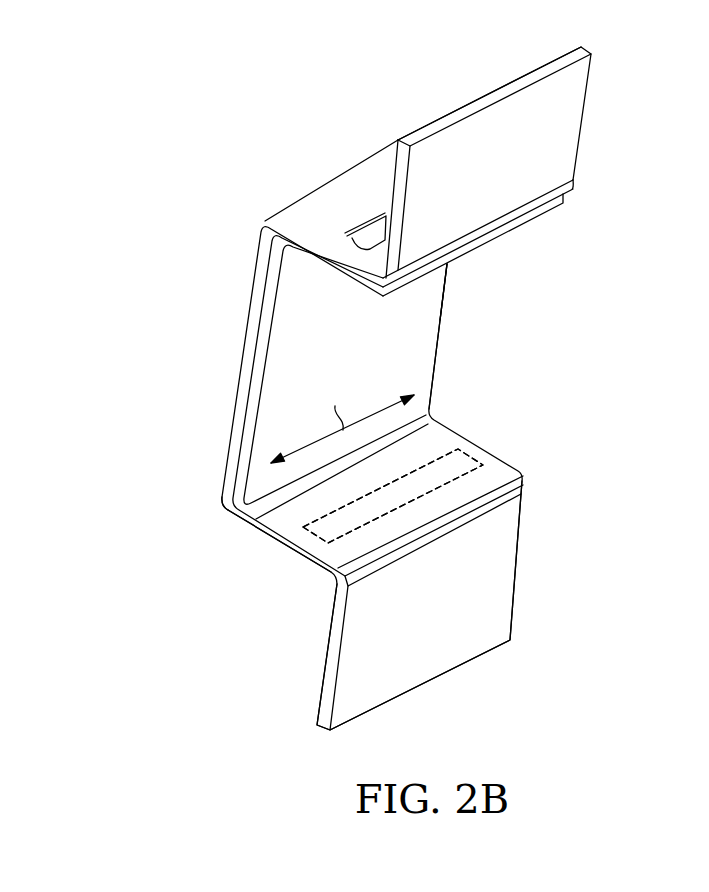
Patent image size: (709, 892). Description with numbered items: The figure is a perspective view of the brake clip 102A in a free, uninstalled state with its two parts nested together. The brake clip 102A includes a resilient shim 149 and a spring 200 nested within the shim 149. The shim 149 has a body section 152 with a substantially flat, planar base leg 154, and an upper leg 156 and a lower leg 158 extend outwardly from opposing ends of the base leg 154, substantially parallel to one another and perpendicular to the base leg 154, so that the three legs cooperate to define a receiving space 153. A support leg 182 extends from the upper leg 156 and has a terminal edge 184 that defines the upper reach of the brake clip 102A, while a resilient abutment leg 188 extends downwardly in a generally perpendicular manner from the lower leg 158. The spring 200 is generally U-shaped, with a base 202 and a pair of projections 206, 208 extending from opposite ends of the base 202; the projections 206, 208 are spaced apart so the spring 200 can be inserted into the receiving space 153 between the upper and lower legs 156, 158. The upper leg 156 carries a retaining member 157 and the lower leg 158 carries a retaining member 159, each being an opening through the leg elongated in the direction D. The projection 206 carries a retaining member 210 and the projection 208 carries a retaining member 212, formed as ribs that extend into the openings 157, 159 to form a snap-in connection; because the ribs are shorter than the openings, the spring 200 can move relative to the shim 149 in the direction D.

The brake clip 102A is at (196, 110).
The terminal edge 184 is at (487, 102).
The support leg 182 is at (553, 115).
The upper leg 156 is at (370, 183).
The retaining member 210 is at (368, 203).
The retaining member 157 is at (318, 218).
The base leg 154 is at (250, 298).
The resilient shim 149 is at (218, 359).
The projection 206 is at (367, 282).
The base 202 is at (391, 366).
The receiving space 153 is at (428, 295).
The spring 200 is at (458, 316).
The retaining member 159 is at (464, 450).
The retaining member 212 is at (393, 496).
The projection 208 is at (504, 477).
The body section 152 is at (208, 518).
The lower leg 158 is at (278, 546).
The resilient abutment leg 188 is at (492, 556).